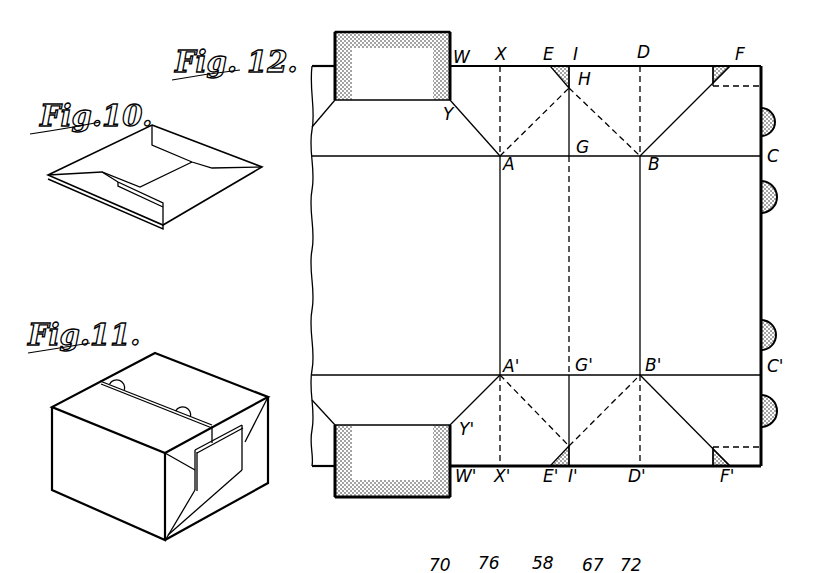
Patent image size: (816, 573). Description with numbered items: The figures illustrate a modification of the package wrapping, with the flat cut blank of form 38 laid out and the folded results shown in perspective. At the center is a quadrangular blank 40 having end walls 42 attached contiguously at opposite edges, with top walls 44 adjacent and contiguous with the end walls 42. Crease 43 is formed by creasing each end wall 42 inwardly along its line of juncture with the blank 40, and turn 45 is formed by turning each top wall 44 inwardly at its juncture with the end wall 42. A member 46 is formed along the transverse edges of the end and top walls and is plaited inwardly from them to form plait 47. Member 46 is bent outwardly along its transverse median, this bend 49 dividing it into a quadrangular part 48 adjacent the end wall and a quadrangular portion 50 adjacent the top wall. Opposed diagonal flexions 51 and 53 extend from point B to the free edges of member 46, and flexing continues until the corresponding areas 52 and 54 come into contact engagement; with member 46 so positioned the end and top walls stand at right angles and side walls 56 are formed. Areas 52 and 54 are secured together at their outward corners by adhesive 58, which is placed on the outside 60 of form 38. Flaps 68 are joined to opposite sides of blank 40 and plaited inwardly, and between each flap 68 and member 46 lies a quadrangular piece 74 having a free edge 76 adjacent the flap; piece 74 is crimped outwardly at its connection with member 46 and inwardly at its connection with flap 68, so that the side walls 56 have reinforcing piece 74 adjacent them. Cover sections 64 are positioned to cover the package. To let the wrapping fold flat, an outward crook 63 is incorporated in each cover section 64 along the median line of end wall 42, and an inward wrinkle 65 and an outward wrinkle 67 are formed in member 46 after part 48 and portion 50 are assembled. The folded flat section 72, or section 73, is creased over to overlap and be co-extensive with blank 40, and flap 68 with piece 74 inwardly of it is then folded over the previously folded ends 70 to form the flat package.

In FIG. 12, the form 38 is at (512, 495).
In FIG. 12, the quadrangular blank 40 is at (387, 253).
In FIG. 12, the end wall 42 is at (526, 253).
In FIG. 12, the crease 43 is at (502, 320).
In FIG. 12, the top wall 44 is at (699, 255).
In FIG. 12, the turn 45 is at (643, 333).
In FIG. 12, the member 46 is at (671, 267).
In FIG. 12, the plait 47 is at (594, 160).
In FIG. 12, the quadrangular part 48 is at (535, 143).
In FIG. 12, the outward bend 49 is at (643, 87).
In FIG. 12, the quadrangular portion 50 is at (725, 148).
In FIG. 12, the diagonal flexion 51 is at (593, 112).
In FIG. 12, the area 52 is at (623, 80).
In FIG. 12, the diagonal flexion 53 is at (695, 117).
In FIG. 12, the area 54 is at (693, 79).
In FIG. 11, the side wall 56 is at (257, 443).
In FIG. 12, the adhesive 58 is at (561, 64).
In FIG. 12, the outside 60 is at (651, 72).
In FIG. 12, the outward crook 63 is at (571, 278).
In FIG. 11, the cover section 64 is at (220, 376).
In FIG. 12, the cover section 64 is at (781, 270).
In FIG. 12, the inward wrinkle 65 is at (571, 124).
In FIG. 12, the outward wrinkle 67 is at (582, 70).
In FIG. 10, the flap 68 is at (135, 172).
In FIG. 11, the flap 68 is at (220, 470).
In FIG. 12, the flap 68 is at (392, 264).
In FIG. 12, the folded end 70 is at (445, 34).
In FIG. 11, the flat section 72 is at (122, 391).
In FIG. 12, the flat section 72 is at (769, 210).
In FIG. 10, the flat section 73 is at (186, 131).
In FIG. 12, the quadrangular piece 74 is at (479, 104).
In FIG. 12, the free edge 76 is at (456, 70).